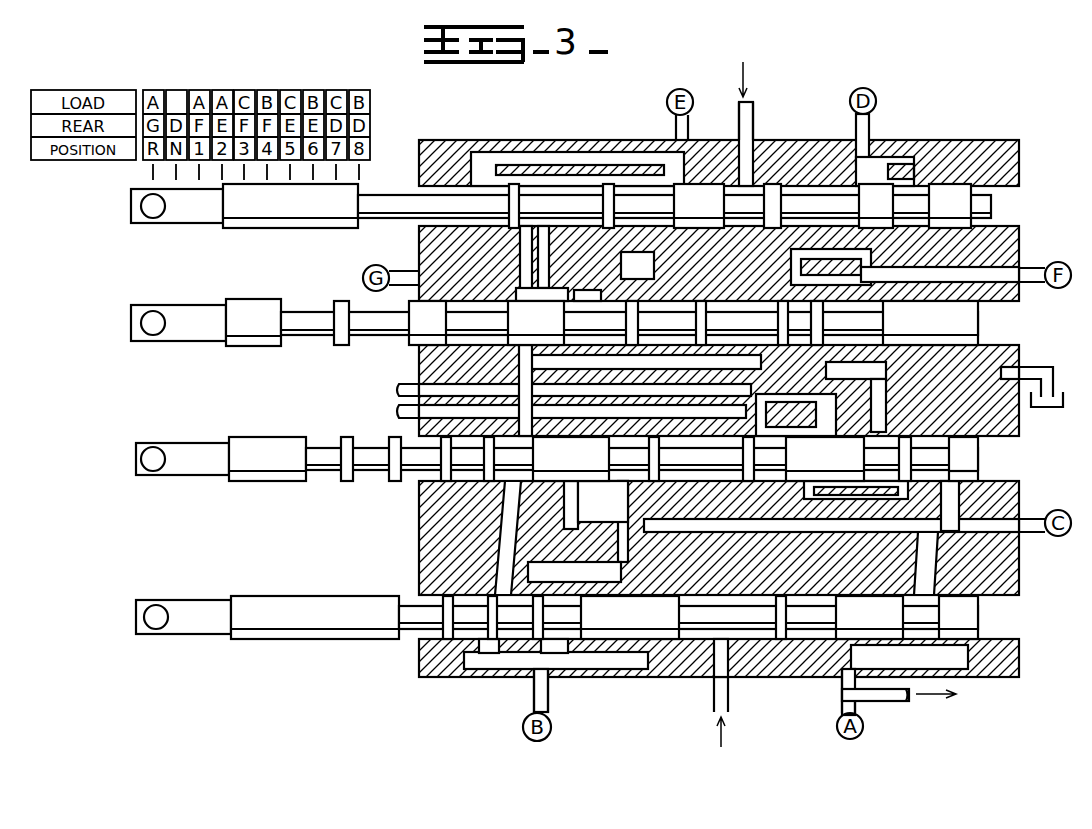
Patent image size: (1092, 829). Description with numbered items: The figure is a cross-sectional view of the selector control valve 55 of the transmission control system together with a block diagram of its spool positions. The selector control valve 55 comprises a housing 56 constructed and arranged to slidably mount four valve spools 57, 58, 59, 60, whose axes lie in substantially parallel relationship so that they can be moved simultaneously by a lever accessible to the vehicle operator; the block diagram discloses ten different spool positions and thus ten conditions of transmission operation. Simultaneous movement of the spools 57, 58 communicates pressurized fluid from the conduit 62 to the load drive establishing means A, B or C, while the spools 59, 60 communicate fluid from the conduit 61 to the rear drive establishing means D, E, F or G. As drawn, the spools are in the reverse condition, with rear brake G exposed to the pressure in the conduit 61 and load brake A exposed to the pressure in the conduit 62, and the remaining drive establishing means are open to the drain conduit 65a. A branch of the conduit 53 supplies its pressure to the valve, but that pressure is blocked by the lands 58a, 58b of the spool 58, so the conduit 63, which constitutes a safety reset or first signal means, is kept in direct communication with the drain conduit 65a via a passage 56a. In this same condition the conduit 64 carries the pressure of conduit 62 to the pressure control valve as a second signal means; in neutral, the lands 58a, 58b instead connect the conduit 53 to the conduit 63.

The conduit 53 is at (403, 401).
The selector control valve 55 is at (691, 428).
The housing 56 is at (464, 702).
The passage 56a is at (886, 396).
The valve spool 57 is at (273, 600).
The valve spool 58 is at (557, 458).
The land 58a is at (675, 479).
The land 58b is at (750, 479).
The valve spool 59 is at (255, 300).
The valve spool 60 is at (283, 218).
The conduit 61 is at (765, 92).
The conduit 62 is at (730, 692).
The conduit 63 is at (406, 384).
The conduit 64 is at (888, 698).
The drain conduit 65a is at (1042, 368).